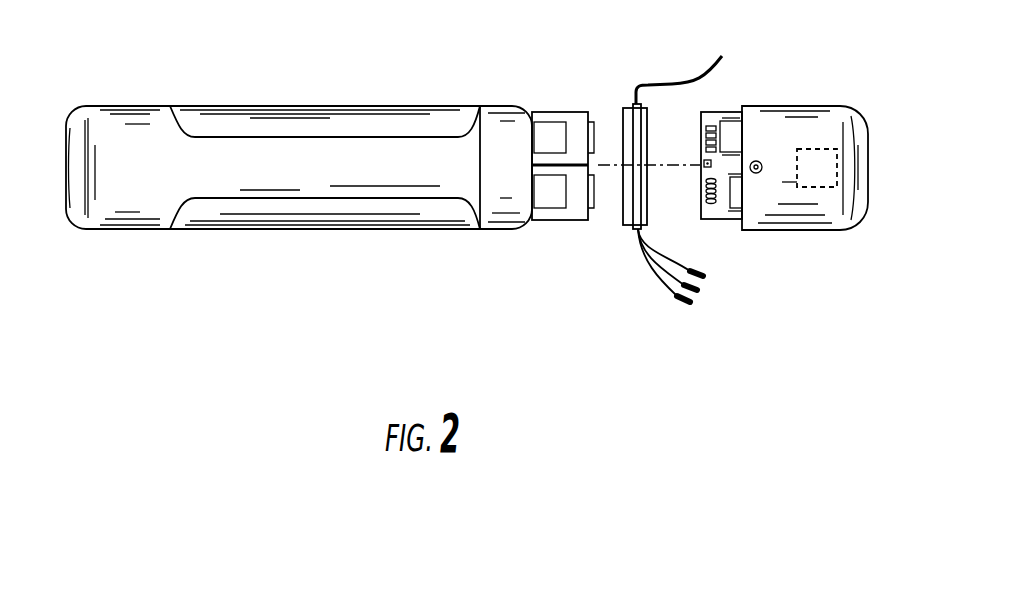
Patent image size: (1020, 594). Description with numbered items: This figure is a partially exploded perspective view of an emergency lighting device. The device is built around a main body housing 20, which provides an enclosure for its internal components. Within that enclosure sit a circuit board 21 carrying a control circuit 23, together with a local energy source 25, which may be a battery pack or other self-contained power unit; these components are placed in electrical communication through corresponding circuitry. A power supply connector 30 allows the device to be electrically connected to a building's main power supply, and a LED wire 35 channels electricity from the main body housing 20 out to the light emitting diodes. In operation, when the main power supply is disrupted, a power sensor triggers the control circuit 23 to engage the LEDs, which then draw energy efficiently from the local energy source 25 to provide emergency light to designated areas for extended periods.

The main body housing 20 is at (224, 218).
The circuit board 21 is at (722, 113).
The control circuit 23 is at (823, 148).
The local energy source 25 is at (575, 110).
The power supply connector 30 is at (648, 263).
The LED wire 35 is at (662, 76).